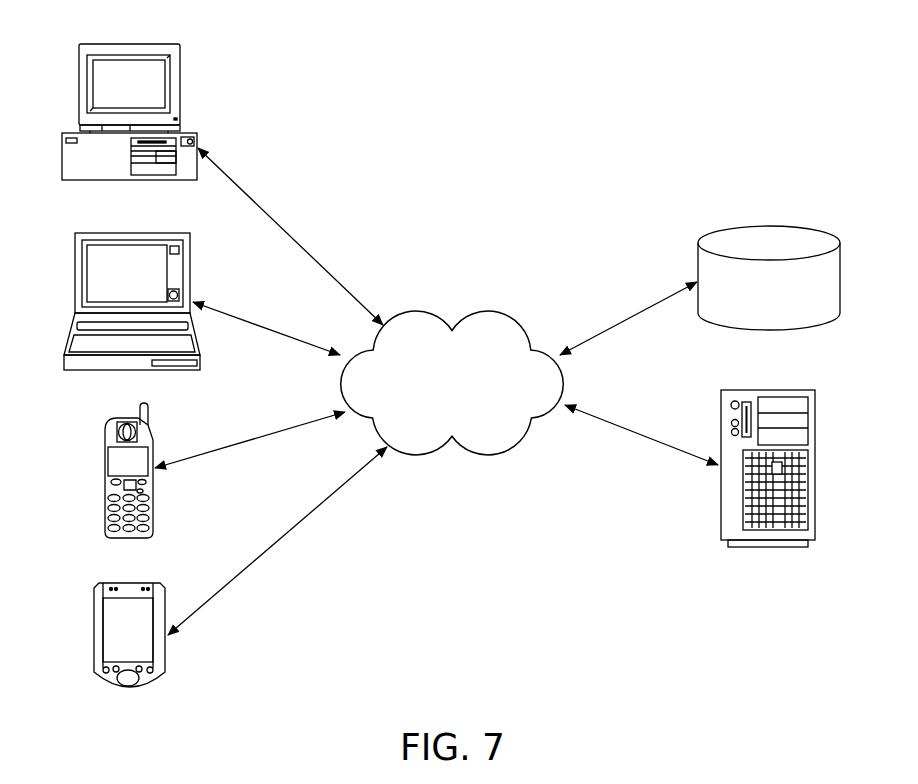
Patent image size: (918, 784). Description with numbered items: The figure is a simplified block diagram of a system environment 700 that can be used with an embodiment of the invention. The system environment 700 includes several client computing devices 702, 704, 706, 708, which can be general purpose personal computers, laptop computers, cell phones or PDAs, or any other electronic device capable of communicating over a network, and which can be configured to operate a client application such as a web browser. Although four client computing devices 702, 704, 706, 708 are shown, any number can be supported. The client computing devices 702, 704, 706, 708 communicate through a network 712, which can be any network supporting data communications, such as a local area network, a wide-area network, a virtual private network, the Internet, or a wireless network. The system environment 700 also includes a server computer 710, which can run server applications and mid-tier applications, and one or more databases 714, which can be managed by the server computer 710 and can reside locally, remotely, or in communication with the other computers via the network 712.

The system environment 700 is at (767, 76).
The client computing device 702 is at (80, 44).
The client computing device 704 is at (100, 233).
The client computing device 706 is at (106, 435).
The client computing device 708 is at (102, 583).
The server computer 710 is at (768, 390).
The network 712 is at (465, 405).
The databases 714 is at (768, 228).